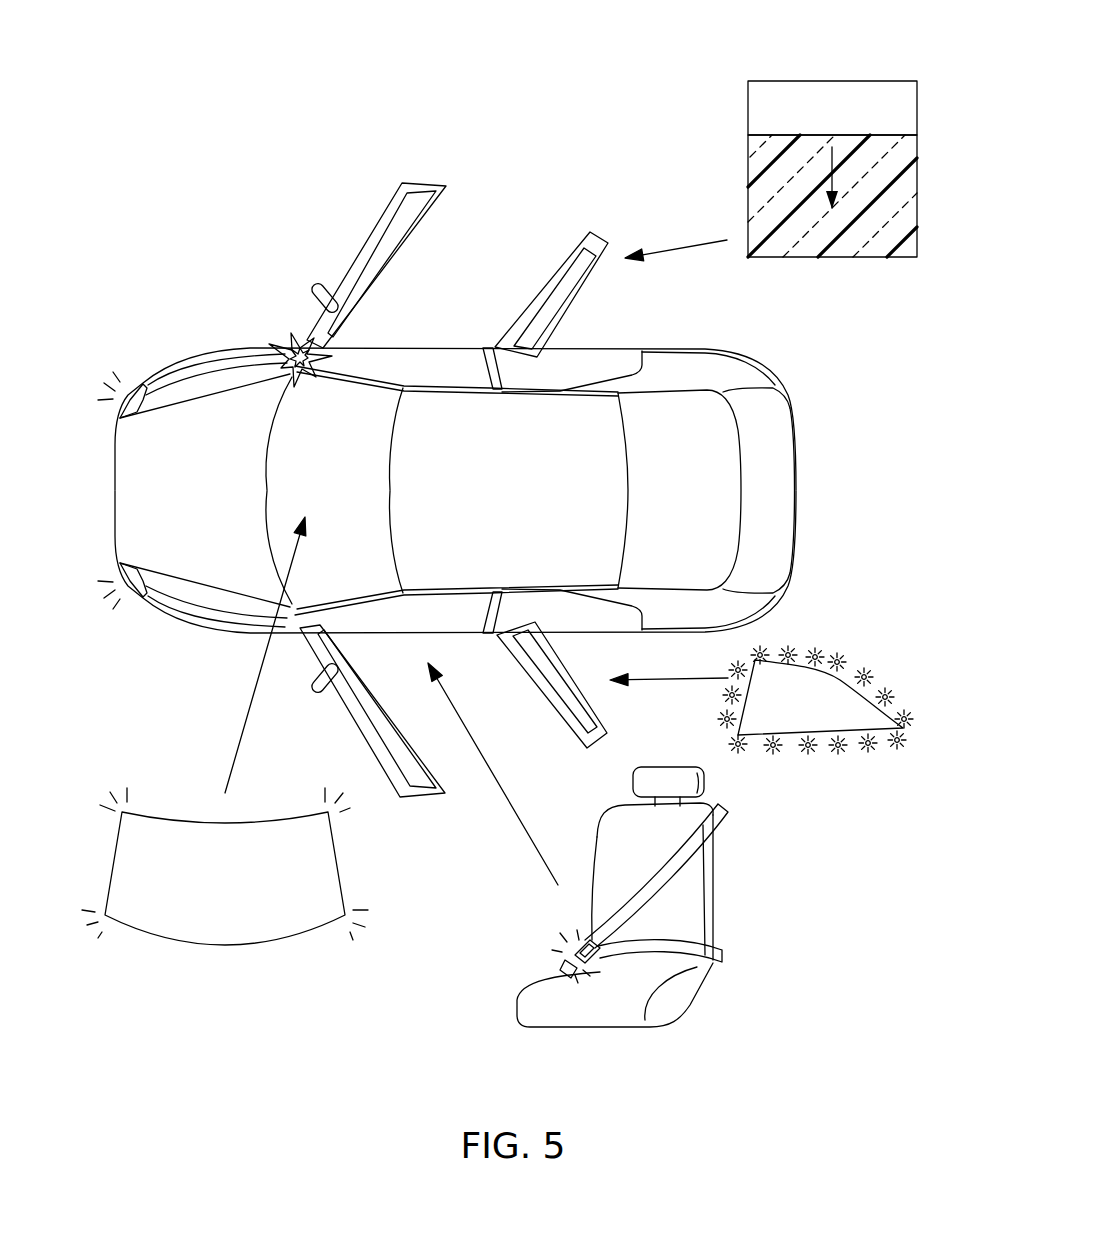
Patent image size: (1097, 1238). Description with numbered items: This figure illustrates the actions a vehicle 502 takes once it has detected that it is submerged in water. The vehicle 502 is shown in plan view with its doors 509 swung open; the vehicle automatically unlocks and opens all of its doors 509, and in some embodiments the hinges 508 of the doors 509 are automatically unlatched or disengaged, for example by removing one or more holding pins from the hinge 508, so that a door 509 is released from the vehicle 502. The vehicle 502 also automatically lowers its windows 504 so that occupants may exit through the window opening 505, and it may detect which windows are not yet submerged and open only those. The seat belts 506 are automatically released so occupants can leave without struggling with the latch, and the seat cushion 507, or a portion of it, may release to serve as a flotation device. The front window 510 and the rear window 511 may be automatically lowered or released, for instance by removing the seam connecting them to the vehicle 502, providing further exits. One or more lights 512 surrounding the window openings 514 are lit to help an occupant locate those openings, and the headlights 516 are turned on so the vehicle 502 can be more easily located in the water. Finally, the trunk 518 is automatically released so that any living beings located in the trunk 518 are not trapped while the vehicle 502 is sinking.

The vehicle 502 is at (207, 348).
The windows 504 is at (748, 166).
The window opening 505 is at (848, 82).
The seat belts 506 is at (540, 928).
The seat cushion 507 is at (670, 1000).
The hinges 508 is at (296, 314).
The doors 509 is at (421, 183).
The front window 510 is at (198, 823).
The rear window 511 is at (685, 422).
The lights 512 is at (837, 636).
The window openings 514 is at (845, 690).
The headlights 516 is at (145, 392).
The trunk 518 is at (782, 487).